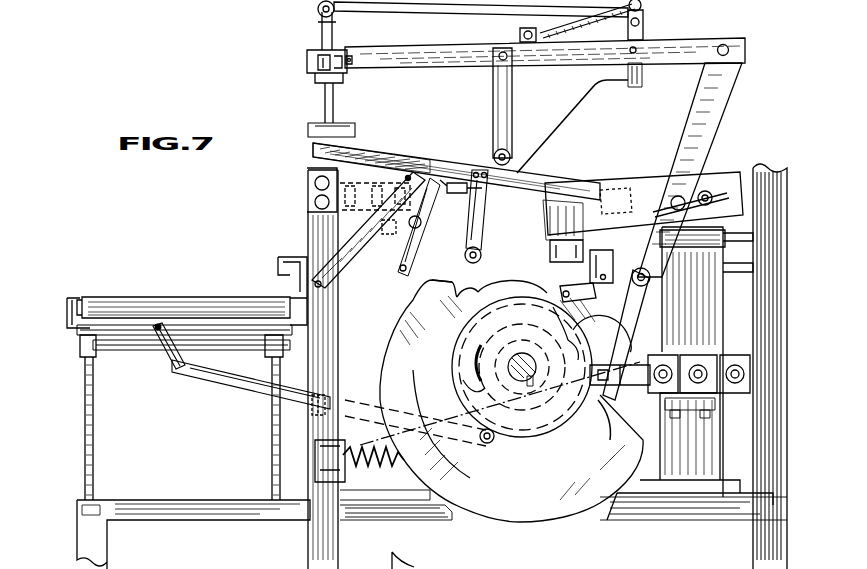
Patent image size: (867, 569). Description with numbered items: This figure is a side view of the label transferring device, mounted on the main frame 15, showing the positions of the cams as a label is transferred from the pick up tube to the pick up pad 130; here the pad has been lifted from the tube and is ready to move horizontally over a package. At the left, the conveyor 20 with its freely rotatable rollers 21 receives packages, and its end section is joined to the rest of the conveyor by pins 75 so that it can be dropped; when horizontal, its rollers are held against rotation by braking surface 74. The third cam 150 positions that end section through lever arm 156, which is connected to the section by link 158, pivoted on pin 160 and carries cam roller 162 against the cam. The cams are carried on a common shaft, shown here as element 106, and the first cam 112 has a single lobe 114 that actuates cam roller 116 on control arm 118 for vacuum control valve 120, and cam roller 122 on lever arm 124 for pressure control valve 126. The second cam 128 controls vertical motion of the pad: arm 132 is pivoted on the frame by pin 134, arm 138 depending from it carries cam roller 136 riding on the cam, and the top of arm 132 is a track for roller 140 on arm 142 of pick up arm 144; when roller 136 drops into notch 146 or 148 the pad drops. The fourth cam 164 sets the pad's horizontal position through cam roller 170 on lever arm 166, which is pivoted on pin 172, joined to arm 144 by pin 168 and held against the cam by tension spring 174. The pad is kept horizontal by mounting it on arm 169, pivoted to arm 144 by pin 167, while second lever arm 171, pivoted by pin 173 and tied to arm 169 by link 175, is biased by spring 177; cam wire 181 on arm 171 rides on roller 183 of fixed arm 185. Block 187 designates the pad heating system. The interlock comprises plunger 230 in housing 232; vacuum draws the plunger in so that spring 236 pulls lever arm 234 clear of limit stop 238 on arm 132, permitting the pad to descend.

The main frame 15 is at (306, 545).
The conveyor 20 is at (70, 295).
The rollers 21 is at (148, 296).
The braking surface 74 is at (276, 296).
The pins 75 is at (78, 345).
The shaft 106 is at (572, 372).
The first cam 112 is at (490, 298).
The lobe 114 is at (585, 410).
The cam roller 116 is at (632, 356).
The control arm 118 is at (696, 355).
The vacuum control valve 120 is at (735, 355).
The cam roller 122 is at (580, 298).
The lever arm 124 is at (590, 262).
The pressure control valve 126 is at (590, 245).
The second cam 128 is at (403, 328).
The label pick up pad 130 is at (308, 128).
The arm 132 is at (574, 178).
The pin 134 is at (634, 184).
The cam roller 136 is at (480, 250).
The arm 138 is at (488, 216).
The roller 140 is at (494, 152).
The arm 142 is at (492, 88).
The pick up arm 144 is at (396, 44).
The notch 146 is at (434, 284).
The notch 148 is at (540, 322).
The third cam 150 is at (460, 396).
The lever arm 156 is at (262, 388).
The link 158 is at (172, 362).
The pin 160 is at (334, 398).
The cam roller 162 is at (482, 445).
The fourth cam 164 is at (578, 522).
The lever arm 166 is at (715, 126).
The pin 167 is at (352, 62).
The pin 168 is at (733, 42).
The arm 169 is at (312, 56).
The cam roller 170 is at (628, 402).
The second lever arm 171 is at (646, 18).
The pin 172 is at (651, 280).
The pin 173 is at (640, 58).
The tension spring 174 is at (348, 456).
The link 175 is at (424, 20).
The spring 177 is at (578, 55).
The cam wire 181 is at (568, 114).
The roller 183 is at (382, 230).
The fixed arm 185 is at (366, 270).
The block 187 is at (318, 63).
The plunger 230 is at (421, 225).
The housing 232 is at (306, 213).
The lever arm 234 is at (416, 248).
The spring 236 is at (430, 156).
The limit stop 238 is at (458, 196).